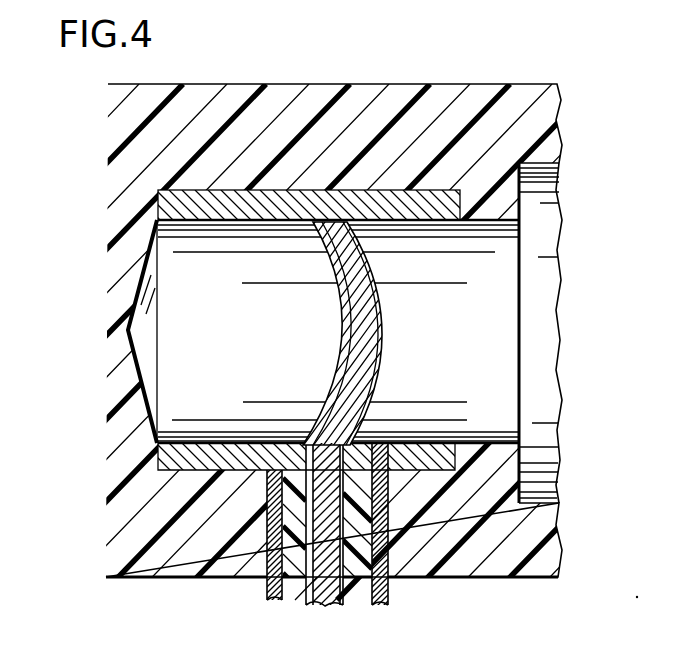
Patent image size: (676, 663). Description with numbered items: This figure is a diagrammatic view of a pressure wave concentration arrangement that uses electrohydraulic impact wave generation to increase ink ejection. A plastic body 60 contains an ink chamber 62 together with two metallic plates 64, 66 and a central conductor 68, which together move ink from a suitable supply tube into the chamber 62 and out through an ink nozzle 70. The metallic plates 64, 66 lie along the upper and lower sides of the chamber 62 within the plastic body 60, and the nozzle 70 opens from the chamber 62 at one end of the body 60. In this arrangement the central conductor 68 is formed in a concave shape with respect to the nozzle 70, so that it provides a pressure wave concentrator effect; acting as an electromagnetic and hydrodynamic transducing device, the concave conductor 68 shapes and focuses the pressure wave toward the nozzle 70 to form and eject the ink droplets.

The plastic body 60 is at (182, 568).
The ink chamber 62 is at (263, 323).
The metallic plate 64 is at (160, 203).
The metallic plate 66 is at (186, 452).
The central conductor 68 is at (366, 343).
The ink nozzle 70 is at (128, 331).